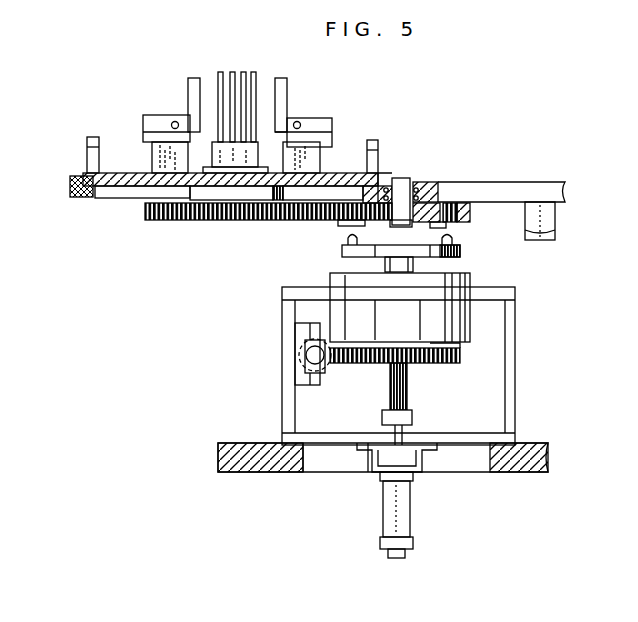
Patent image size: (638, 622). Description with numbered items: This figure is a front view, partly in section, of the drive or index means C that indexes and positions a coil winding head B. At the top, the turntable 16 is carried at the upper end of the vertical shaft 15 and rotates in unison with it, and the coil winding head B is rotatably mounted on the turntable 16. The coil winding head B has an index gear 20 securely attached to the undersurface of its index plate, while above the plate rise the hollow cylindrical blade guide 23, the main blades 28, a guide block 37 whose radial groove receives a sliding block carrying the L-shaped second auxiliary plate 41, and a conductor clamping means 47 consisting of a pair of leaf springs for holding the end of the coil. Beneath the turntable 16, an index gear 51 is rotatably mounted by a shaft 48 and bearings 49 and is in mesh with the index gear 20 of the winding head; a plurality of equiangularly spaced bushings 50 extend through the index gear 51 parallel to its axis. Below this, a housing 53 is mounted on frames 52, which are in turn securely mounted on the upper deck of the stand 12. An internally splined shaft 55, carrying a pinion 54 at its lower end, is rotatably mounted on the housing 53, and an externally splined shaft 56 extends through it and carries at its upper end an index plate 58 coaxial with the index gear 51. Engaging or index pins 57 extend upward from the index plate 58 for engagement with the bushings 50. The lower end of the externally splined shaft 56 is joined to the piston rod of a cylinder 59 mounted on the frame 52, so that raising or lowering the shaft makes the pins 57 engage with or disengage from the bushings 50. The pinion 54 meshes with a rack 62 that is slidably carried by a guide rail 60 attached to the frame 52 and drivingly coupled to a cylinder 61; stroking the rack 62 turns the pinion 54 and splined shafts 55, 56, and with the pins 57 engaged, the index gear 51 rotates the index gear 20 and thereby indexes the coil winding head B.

The coil winding head B is at (143, 120).
The second auxiliary plate 41 is at (193, 85).
The main blades 28 is at (253, 72).
The blade guide 23 is at (270, 145).
The conductor clamping means 47 is at (87, 150).
The guide block 37 is at (152, 162).
The shaft 48 is at (401, 185).
The bearings 49 is at (420, 185).
The turntable 16 is at (503, 182).
The vertical shaft 15 is at (556, 216).
The index gear 51 is at (472, 212).
The index gear 20 is at (150, 220).
The bushings 50 is at (346, 232).
The engaging or index pins 57 is at (343, 250).
The index plate 58 is at (460, 255).
The housing 53 is at (330, 280).
The internally splined shaft 55 is at (457, 345).
The rack 62 is at (300, 348).
The cylinder 61 is at (325, 367).
The pinion 54 is at (455, 363).
The frames 52 is at (282, 405).
The guide rail 60 is at (312, 385).
The externally splined shaft 56 is at (407, 400).
The stand 12 is at (222, 456).
The drive or index means C is at (325, 470).
The cylinder 59 is at (405, 510).